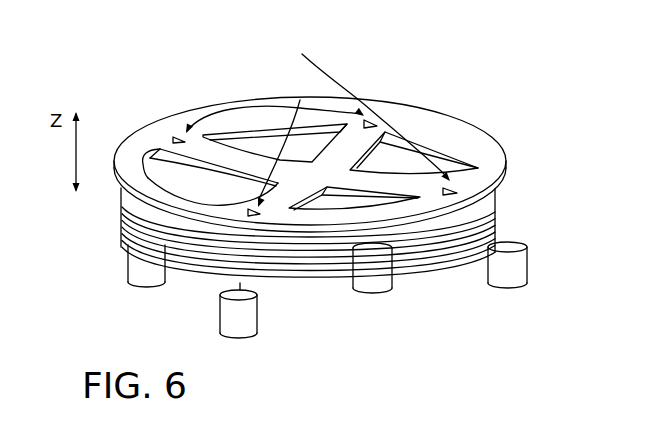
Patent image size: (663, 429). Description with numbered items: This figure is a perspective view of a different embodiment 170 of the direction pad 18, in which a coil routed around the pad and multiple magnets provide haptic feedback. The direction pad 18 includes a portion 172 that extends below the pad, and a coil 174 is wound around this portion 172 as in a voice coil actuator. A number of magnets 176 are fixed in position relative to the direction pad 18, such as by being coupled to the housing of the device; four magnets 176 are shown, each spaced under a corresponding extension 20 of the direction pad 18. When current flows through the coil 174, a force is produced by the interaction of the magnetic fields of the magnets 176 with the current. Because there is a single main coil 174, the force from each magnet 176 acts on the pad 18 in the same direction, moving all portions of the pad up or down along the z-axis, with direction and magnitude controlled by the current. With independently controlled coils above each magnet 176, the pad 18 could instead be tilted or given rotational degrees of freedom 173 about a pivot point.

The embodiment of the direction pad 170 is at (217, 60).
The direction pad 18 is at (127, 165).
The extension 20 is at (175, 131).
The rotational degrees of freedom 173 is at (300, 100).
The portion 172 is at (118, 218).
The coil 174 is at (497, 212).
The magnets 176 is at (134, 280).